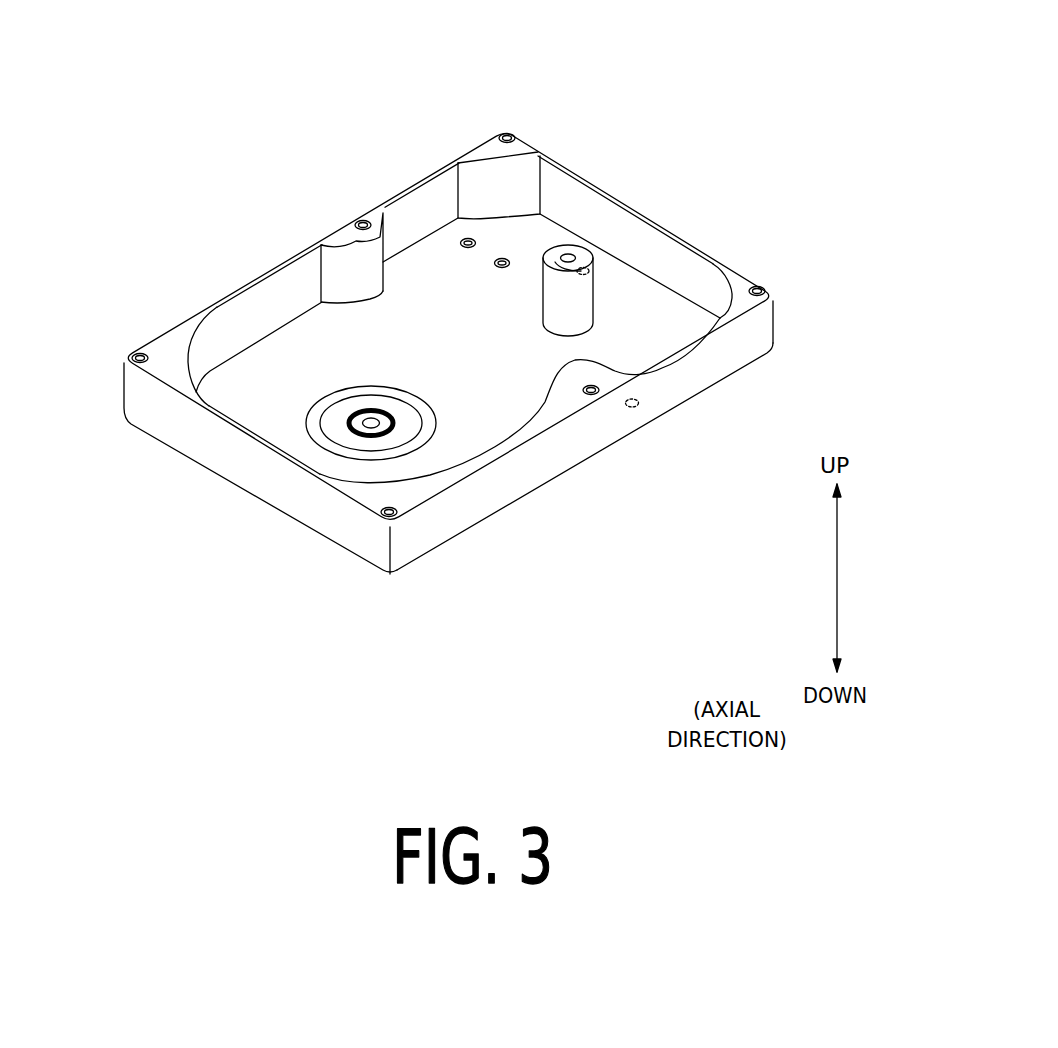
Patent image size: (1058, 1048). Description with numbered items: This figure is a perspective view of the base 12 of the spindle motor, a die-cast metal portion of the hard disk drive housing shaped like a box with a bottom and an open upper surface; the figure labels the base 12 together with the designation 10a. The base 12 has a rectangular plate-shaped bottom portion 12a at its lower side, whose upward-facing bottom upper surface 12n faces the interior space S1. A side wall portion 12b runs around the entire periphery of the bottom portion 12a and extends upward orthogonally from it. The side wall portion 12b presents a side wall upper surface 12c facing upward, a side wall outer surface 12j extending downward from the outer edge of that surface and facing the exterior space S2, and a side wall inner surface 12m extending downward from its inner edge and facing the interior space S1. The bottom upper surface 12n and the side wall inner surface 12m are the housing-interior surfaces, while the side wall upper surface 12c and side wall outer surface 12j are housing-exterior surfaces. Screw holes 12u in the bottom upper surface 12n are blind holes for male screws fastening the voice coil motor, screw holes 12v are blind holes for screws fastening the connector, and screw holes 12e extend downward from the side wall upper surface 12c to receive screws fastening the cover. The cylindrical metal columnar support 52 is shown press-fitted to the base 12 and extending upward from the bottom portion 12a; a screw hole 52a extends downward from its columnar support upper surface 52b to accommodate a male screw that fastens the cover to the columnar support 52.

The stationary portion 10a is at (448, 354).
The base 12 is at (535, 511).
The bottom portion 12a is at (297, 350).
The side wall portion 12b is at (408, 173).
The side wall upper surface 12c is at (363, 495).
The screw holes 12e is at (133, 350).
The side wall outer surface 12j is at (700, 372).
The side wall inner surface 12m is at (497, 177).
The bottom upper surface 12n is at (252, 393).
The screw holes 12u is at (636, 395).
The screw holes 12v is at (480, 238).
The columnar support 52 is at (605, 171).
The screw hole 52a is at (567, 250).
The columnar support upper surface 52b is at (582, 257).
The interior space S1 is at (357, 327).
The exterior space S2 is at (706, 195).